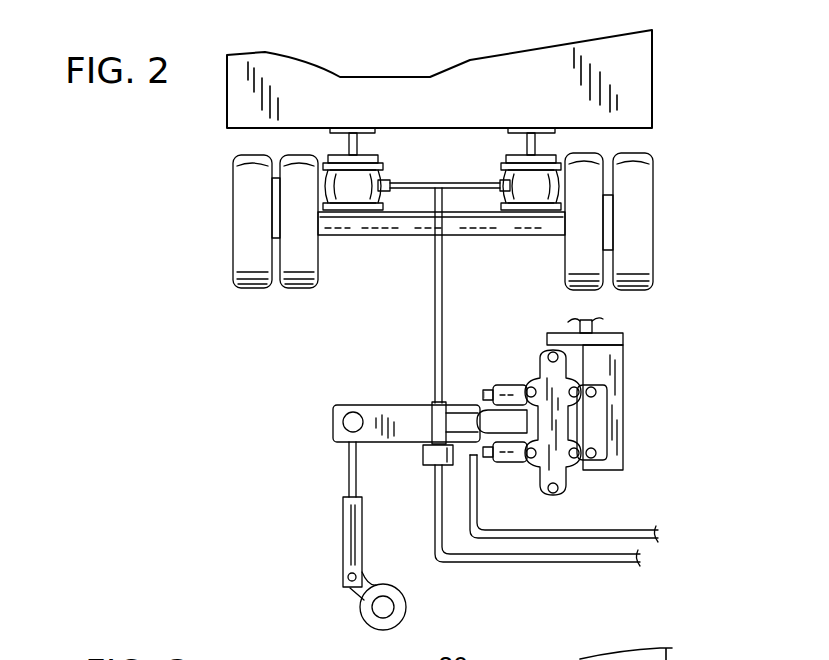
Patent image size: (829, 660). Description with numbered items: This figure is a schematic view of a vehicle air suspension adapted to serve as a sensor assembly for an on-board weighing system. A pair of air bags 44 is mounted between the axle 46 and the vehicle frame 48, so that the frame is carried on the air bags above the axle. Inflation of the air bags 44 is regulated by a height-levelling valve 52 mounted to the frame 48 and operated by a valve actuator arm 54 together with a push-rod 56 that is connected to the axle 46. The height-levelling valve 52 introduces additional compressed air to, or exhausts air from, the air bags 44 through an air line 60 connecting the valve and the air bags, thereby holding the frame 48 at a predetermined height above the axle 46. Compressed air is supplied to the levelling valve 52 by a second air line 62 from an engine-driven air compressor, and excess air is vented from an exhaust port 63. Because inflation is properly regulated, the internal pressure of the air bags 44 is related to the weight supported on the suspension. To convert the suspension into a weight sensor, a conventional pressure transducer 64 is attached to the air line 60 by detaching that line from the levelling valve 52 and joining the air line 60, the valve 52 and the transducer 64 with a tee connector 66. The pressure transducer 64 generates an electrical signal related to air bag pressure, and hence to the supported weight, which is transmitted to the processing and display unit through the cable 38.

The cable 38 is at (592, 565).
The air bags 44 is at (330, 186).
The axle 46 is at (396, 238).
The frame 48 is at (377, 131).
The height-levelling valve 52 is at (570, 470).
The valve actuator arm 54 is at (368, 405).
The push-rod 56 is at (348, 478).
The air line 60 is at (440, 280).
The second air line 62 is at (620, 527).
The exhaust port 63 is at (483, 395).
The pressure transducer 64 is at (424, 457).
The tee connector 66 is at (433, 420).